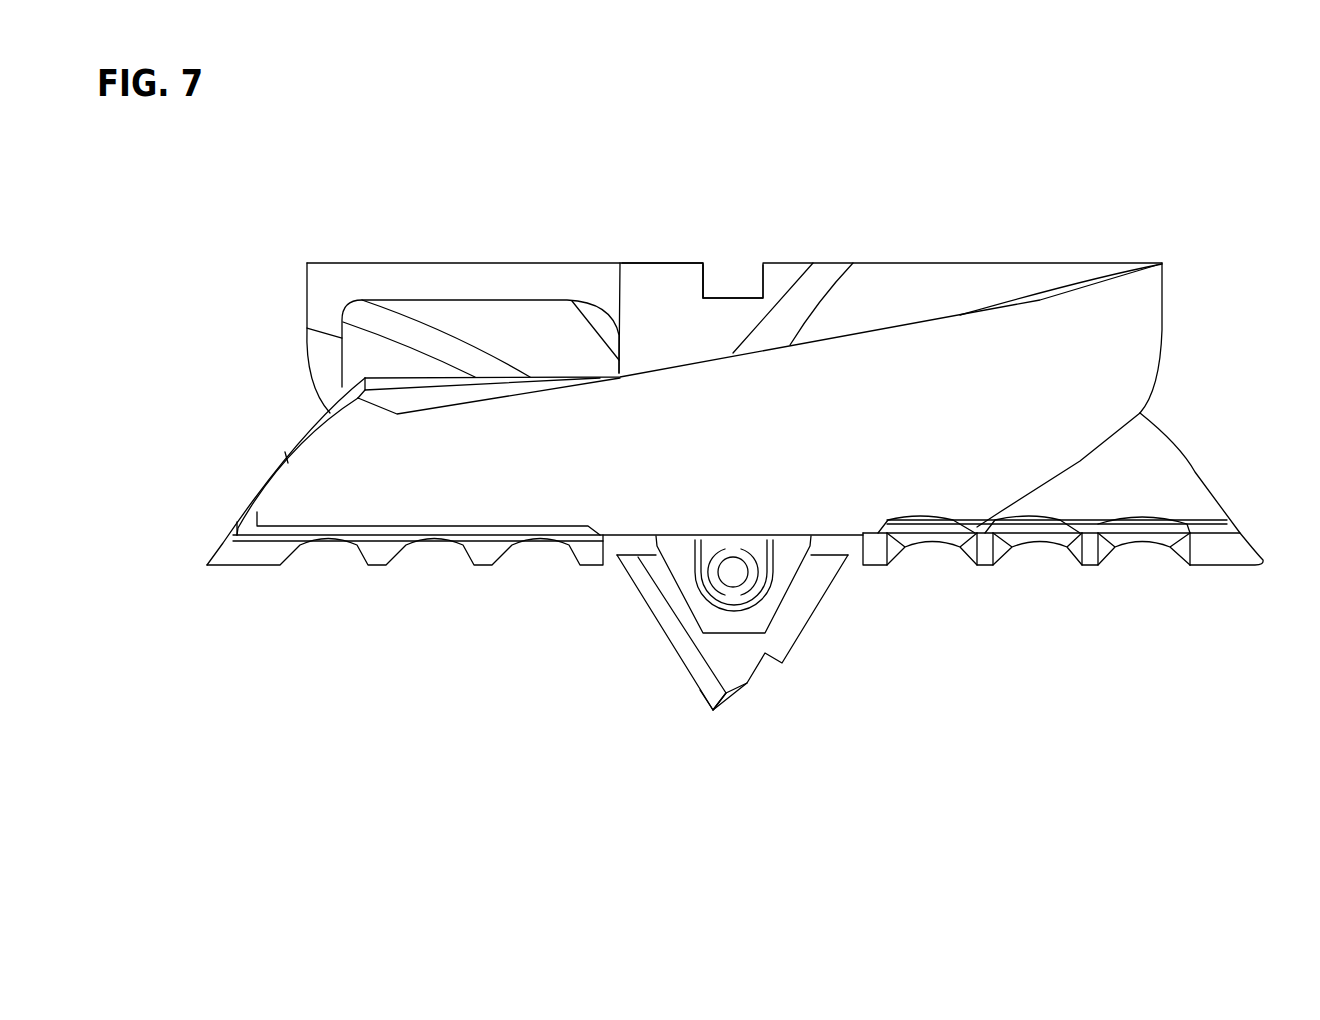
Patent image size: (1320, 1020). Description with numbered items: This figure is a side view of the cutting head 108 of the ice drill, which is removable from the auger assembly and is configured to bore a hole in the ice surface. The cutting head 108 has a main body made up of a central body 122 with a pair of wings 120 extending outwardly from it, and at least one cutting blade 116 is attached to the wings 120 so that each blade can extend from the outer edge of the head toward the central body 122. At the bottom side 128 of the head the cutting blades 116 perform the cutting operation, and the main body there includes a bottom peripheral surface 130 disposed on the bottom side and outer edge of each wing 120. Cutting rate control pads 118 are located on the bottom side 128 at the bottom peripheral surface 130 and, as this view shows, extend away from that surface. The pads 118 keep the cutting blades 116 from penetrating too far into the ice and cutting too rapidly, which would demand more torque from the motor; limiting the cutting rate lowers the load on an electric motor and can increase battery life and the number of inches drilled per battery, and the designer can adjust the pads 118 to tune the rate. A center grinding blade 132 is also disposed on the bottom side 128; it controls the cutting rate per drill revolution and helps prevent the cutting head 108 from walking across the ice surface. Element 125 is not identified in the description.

The cutting head 108 is at (1195, 128).
The cutting blade 116 is at (247, 553).
The cutting rate control pad 118 is at (640, 520).
The wing 120 is at (875, 380).
The central body 122 is at (665, 282).
The notch 125 is at (743, 135).
The bottom side 128 is at (670, 732).
The bottom peripheral surface 130 is at (450, 527).
The center grinding blade 132 is at (787, 632).